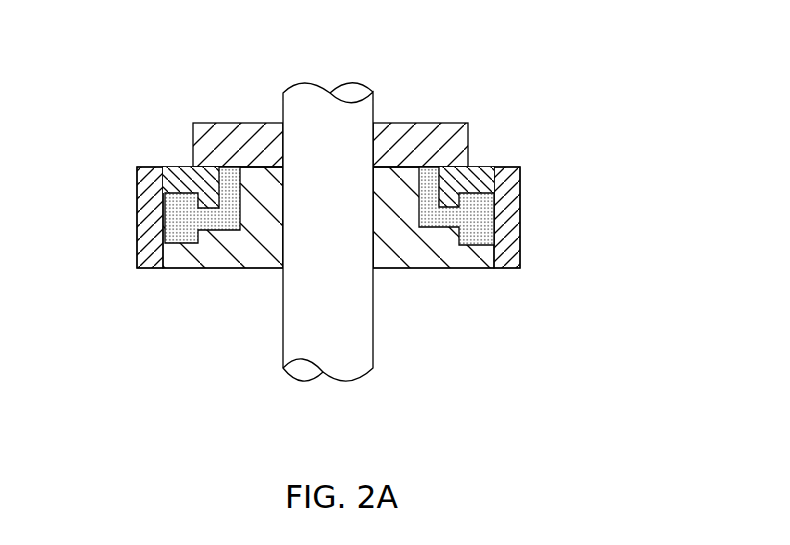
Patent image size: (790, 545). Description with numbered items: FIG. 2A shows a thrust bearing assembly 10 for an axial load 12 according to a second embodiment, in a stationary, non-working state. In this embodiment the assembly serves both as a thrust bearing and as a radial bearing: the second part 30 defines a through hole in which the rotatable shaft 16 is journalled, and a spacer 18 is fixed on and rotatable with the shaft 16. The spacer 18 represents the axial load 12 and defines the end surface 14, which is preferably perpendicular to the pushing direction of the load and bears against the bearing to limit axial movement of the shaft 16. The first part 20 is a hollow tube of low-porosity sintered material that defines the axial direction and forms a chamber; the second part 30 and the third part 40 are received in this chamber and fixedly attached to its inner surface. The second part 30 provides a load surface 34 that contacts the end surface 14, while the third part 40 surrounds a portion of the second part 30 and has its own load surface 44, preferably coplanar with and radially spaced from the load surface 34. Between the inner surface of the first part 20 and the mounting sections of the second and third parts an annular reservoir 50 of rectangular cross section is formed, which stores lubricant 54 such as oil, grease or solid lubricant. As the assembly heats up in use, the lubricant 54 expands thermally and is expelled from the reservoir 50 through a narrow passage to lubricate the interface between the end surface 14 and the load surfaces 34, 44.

The thrust bearing assembly 10 is at (551, 309).
The axial load 12 is at (222, 145).
The spacer 18 is at (420, 145).
The end surface 14 is at (263, 160).
The shaft 16 is at (310, 320).
The first part 20 is at (512, 203).
The second part 30 is at (415, 248).
The load surface 34 is at (397, 167).
The third part 40 is at (482, 167).
The load surface 44 is at (175, 178).
The annular reservoir 50 is at (475, 223).
The lubricant 54 is at (180, 225).